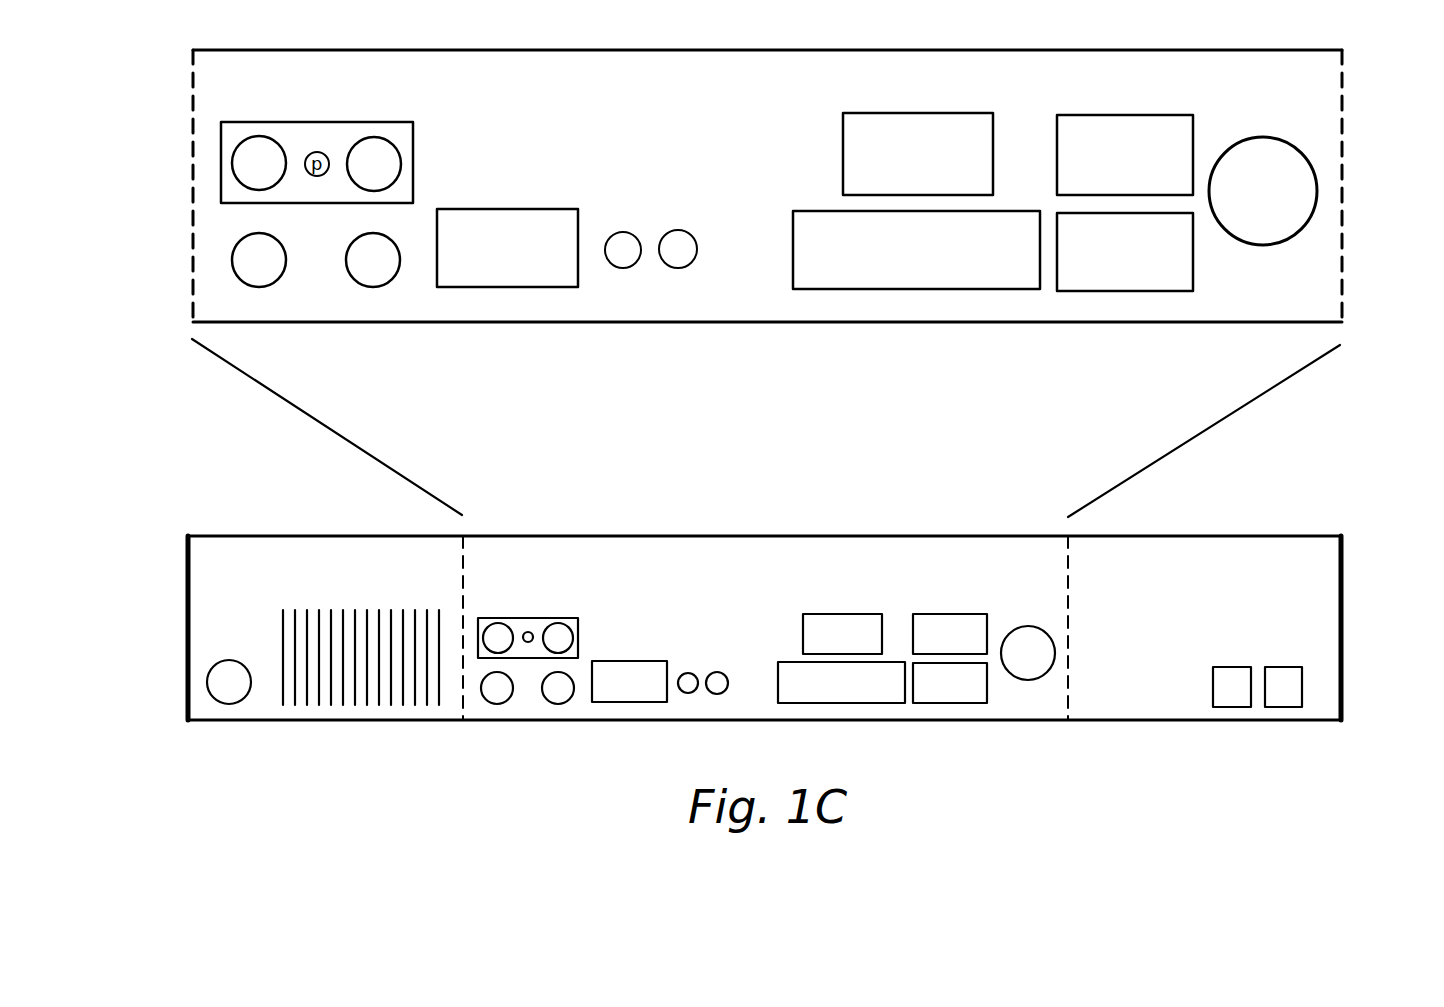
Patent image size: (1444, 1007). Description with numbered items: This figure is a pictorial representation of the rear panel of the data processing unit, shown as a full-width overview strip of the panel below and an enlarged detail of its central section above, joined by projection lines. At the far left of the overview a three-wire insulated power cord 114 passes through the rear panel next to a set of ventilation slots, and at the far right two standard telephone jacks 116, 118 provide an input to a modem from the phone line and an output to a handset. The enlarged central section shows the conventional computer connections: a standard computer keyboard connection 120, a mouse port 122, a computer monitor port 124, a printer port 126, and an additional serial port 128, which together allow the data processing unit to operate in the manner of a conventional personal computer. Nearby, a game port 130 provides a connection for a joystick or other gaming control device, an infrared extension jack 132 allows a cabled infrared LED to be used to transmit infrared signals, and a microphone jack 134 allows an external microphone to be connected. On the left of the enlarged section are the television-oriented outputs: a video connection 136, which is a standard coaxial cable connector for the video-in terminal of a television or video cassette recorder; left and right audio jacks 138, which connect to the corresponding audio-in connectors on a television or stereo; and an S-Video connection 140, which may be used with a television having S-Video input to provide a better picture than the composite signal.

The power cord 114 is at (207, 683).
The telephone jack 116 is at (1232, 667).
The telephone jack 118 is at (1287, 667).
The computer keyboard connection 120 is at (1317, 188).
The mouse port 122 is at (1157, 115).
The computer monitor port 124 is at (955, 113).
The printer port 126 is at (850, 289).
The additional serial port 128 is at (1110, 291).
The game port 130 is at (543, 209).
The infrared extension jack 132 is at (626, 232).
The microphone jack 134 is at (697, 250).
The video connection 136 is at (401, 163).
The left and right audio jacks 138 is at (236, 238).
The S-Video connection 140 is at (360, 236).